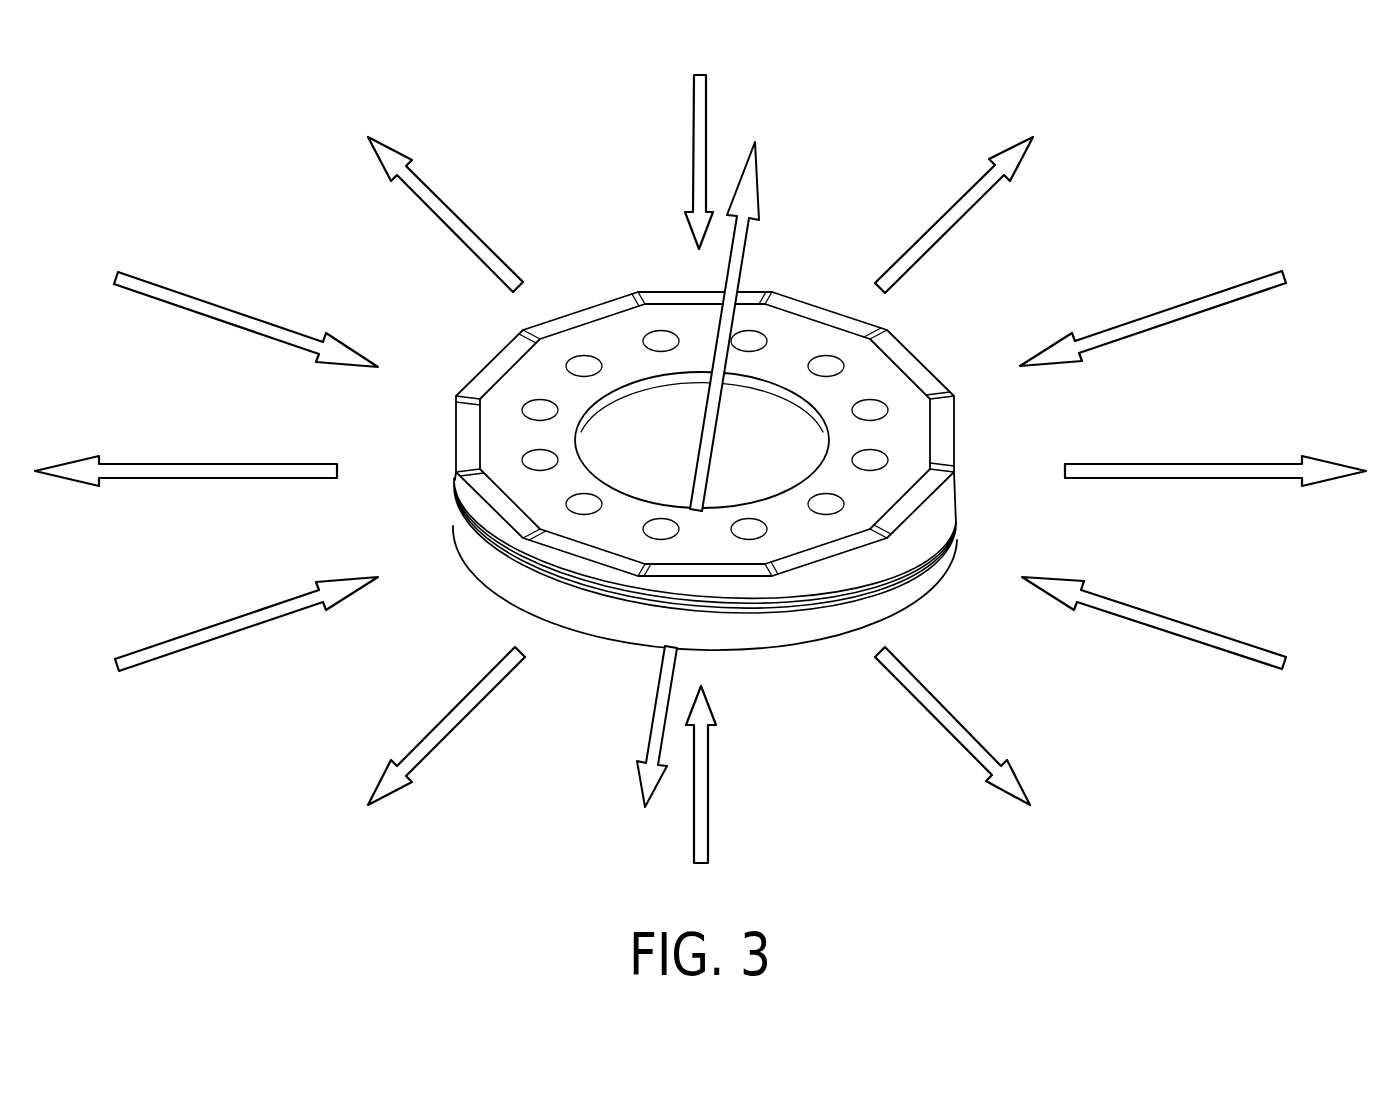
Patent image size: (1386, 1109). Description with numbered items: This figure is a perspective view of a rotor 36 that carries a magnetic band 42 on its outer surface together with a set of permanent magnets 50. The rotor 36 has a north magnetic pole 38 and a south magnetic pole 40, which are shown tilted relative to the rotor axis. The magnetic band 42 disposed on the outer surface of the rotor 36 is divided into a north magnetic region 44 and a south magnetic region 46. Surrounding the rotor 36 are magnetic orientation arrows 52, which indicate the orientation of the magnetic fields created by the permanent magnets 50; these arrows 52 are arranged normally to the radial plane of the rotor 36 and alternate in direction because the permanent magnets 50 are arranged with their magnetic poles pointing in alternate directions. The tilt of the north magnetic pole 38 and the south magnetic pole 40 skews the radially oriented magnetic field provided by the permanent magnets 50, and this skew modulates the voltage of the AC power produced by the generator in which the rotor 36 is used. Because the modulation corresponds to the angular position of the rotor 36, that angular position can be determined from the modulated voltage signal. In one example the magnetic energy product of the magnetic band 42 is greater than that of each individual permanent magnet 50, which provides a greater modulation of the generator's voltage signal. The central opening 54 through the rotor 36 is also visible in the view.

The rotor 36 is at (512, 597).
The north magnetic pole 38 is at (745, 262).
The south magnetic pole 40 is at (657, 700).
The magnetic band 42 is at (738, 434).
The north magnetic region 44 is at (960, 492).
The south magnetic region 46 is at (950, 540).
The permanent magnets 50 is at (570, 555).
The magnetic orientation arrows 52 is at (693, 105).
The central aperture 54 is at (840, 437).